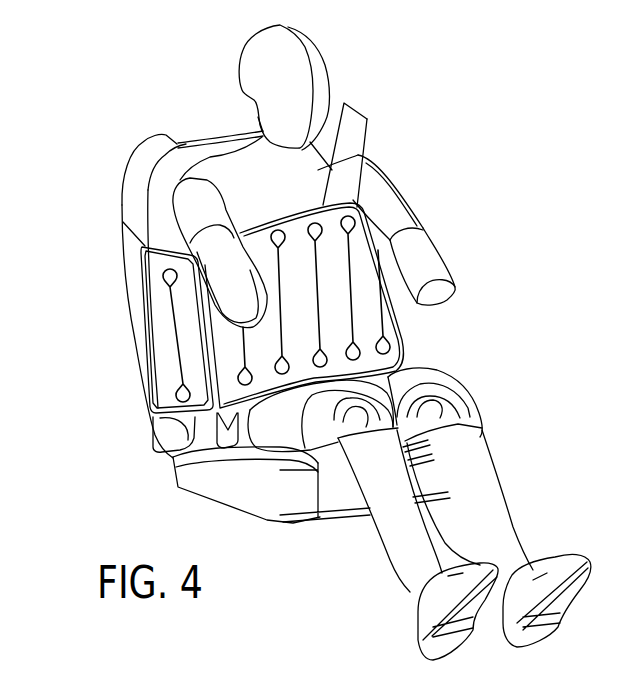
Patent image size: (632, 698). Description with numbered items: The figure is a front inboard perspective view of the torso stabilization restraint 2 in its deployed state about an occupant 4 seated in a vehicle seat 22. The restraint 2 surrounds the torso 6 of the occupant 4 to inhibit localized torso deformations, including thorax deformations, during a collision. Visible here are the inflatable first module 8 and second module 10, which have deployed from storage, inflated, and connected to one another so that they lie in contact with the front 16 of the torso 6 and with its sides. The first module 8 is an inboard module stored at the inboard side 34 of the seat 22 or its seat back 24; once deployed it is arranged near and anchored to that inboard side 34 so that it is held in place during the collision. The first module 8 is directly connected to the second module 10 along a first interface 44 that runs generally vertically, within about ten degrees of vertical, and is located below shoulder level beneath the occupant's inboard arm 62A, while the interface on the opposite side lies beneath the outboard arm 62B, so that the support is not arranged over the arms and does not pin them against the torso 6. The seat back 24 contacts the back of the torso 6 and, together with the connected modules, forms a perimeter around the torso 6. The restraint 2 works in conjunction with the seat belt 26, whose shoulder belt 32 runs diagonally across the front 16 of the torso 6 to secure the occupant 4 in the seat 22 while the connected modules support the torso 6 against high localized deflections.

The torso stabilization restraint 2 is at (84, 117).
The occupant 4 is at (314, 47).
The torso 6 is at (230, 187).
The first module 8 is at (198, 378).
The second module 10 is at (364, 313).
The front 16 is at (310, 178).
The vehicle seat 22 is at (223, 488).
The seat back 24 is at (135, 200).
The seat belt 26 is at (356, 123).
The shoulder belt 32 is at (362, 163).
The inboard side 34 is at (136, 334).
The first interface 44 is at (146, 400).
The inboard arm 62A is at (227, 275).
The outboard arm 62B is at (423, 255).